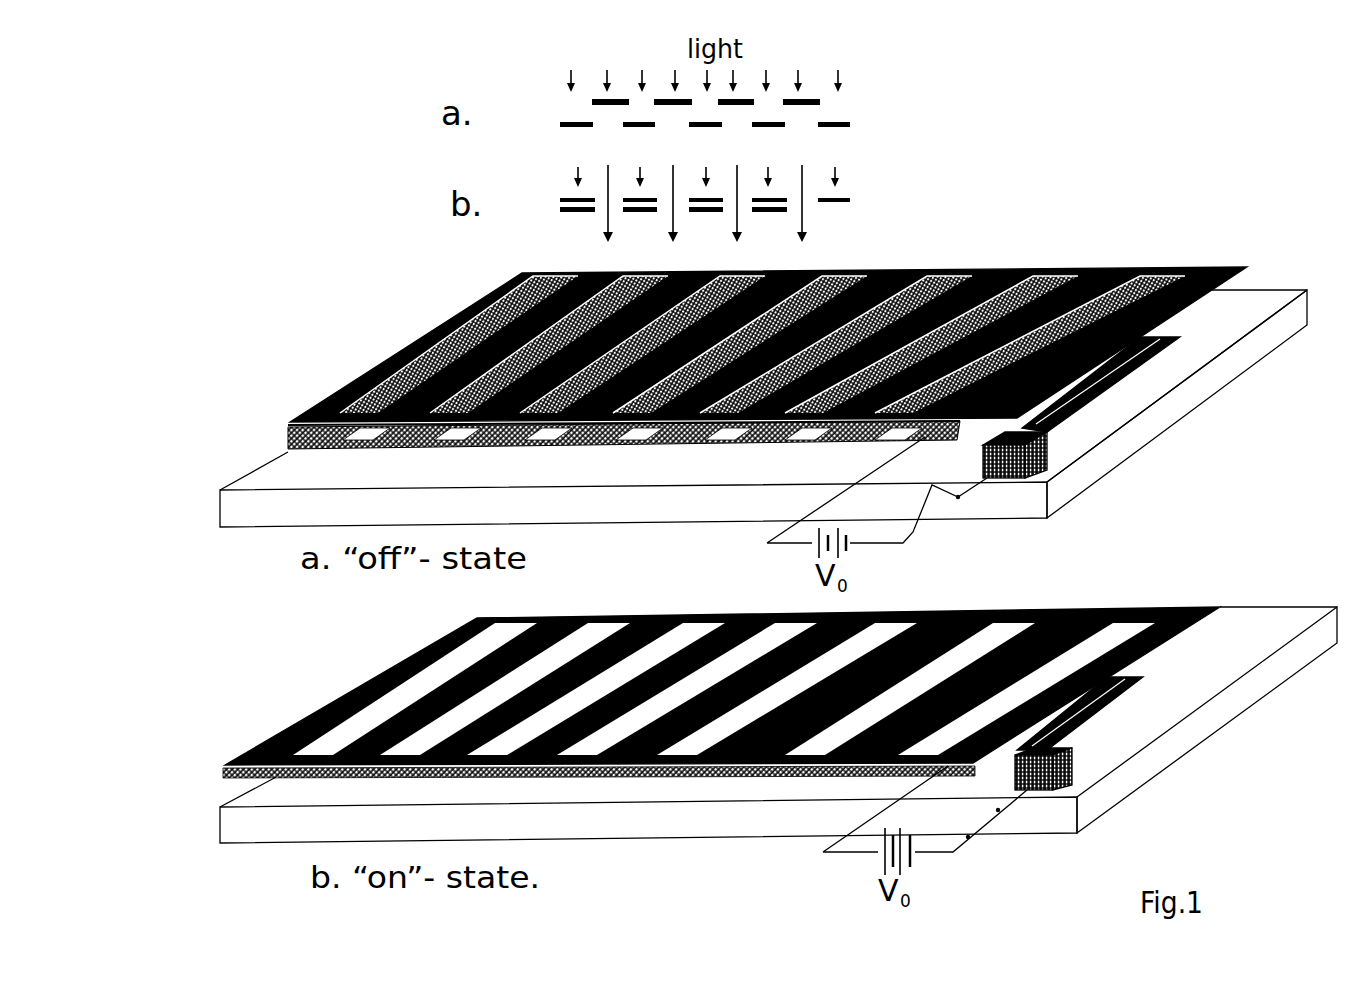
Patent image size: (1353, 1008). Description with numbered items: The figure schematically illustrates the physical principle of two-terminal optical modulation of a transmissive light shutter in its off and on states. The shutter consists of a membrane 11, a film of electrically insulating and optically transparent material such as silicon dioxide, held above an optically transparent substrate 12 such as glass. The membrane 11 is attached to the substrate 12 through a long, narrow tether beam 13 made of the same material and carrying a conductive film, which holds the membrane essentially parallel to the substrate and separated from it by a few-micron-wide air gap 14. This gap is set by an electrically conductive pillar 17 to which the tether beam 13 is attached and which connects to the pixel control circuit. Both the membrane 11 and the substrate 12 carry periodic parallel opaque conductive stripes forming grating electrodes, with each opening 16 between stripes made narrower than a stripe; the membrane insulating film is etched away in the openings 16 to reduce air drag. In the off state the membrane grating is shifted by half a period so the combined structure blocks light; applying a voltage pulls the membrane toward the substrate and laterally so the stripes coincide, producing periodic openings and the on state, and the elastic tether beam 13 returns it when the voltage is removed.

The membrane 11 is at (292, 426).
The substrate 12 is at (288, 505).
The tether beam 13 is at (1170, 393).
The air gap 14 is at (285, 437).
The opening 16 is at (683, 638).
The electrically conductive pillar 17 is at (1040, 458).